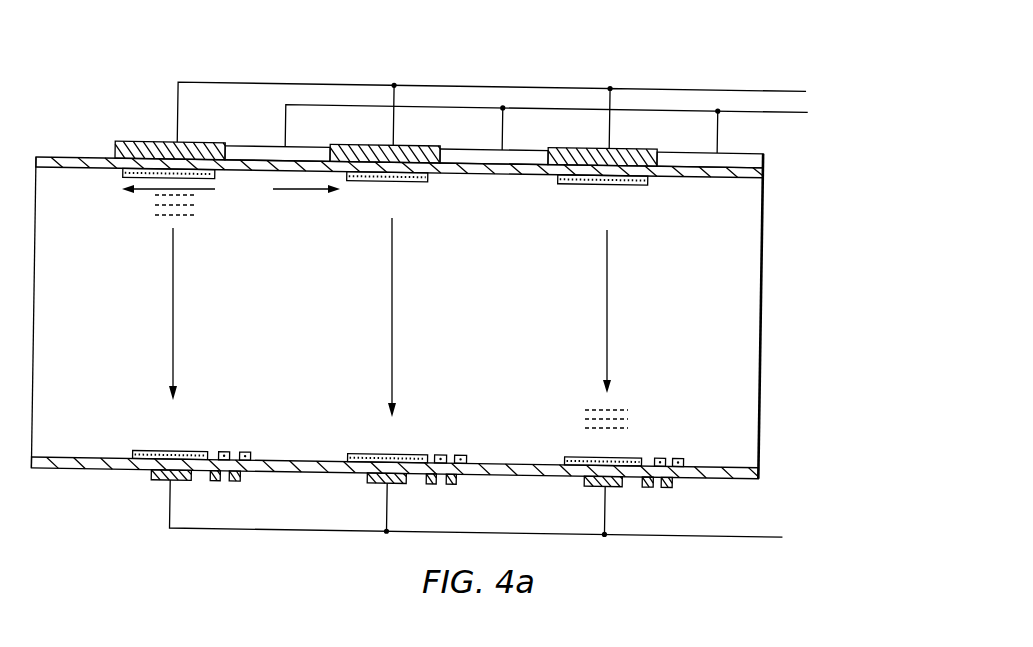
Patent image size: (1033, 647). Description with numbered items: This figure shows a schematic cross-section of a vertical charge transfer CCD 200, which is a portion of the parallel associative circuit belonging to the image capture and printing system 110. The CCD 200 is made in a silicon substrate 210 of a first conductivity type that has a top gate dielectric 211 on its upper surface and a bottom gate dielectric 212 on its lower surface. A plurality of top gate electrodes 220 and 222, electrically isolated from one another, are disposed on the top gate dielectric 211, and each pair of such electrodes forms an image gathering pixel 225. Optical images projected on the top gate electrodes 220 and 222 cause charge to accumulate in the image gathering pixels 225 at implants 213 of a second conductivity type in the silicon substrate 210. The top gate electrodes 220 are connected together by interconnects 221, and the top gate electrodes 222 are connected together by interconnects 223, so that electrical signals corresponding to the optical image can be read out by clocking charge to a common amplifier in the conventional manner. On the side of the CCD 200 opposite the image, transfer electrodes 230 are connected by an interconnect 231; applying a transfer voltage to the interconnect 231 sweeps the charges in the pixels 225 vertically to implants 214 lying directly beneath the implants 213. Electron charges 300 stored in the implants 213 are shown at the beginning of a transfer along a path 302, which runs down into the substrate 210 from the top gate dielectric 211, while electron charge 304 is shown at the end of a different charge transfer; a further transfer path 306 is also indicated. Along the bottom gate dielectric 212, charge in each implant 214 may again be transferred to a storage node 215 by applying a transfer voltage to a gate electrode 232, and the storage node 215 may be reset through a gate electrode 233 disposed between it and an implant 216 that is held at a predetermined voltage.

The image capture and printing system 110 is at (367, 73).
The vertical charge transfer CCD 200 is at (60, 135).
The silicon substrate 210 is at (755, 303).
The top gate dielectric 211 is at (760, 173).
The bottom gate dielectric 212 is at (760, 473).
The implants 213 is at (418, 182).
The implants 214 is at (145, 448).
The storage node 215 is at (227, 448).
The implant 216 is at (248, 450).
The top gate electrodes 220 is at (130, 140).
The interconnects 221 is at (792, 92).
The top gate electrodes 222 is at (262, 145).
The interconnects 223 is at (795, 115).
The image gathering pixel 225 is at (231, 190).
The transfer electrodes 230 is at (160, 480).
The interconnect 231 is at (767, 540).
The gate electrode 232 is at (217, 480).
The gate electrode 233 is at (237, 480).
The electron charges 300 is at (200, 213).
The path 302 is at (173, 325).
The electron charge 304 is at (630, 413).
The particle movement path 306 is at (395, 433).